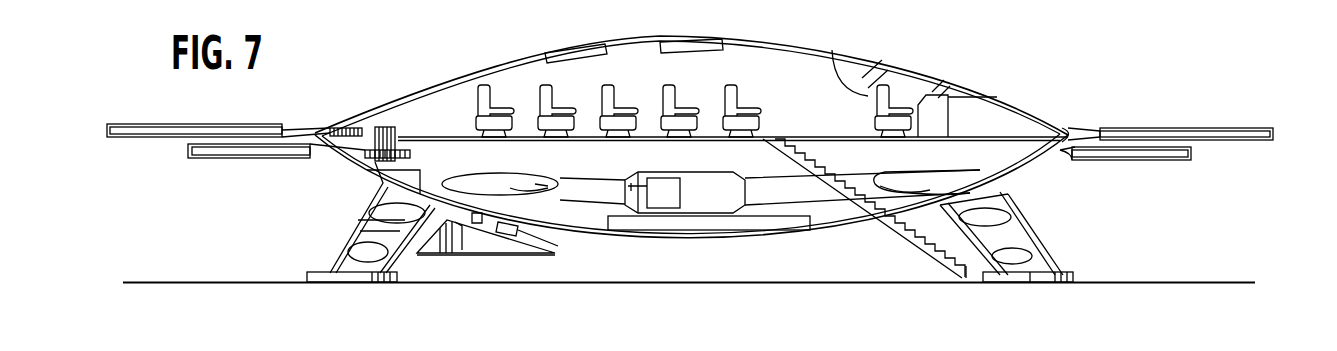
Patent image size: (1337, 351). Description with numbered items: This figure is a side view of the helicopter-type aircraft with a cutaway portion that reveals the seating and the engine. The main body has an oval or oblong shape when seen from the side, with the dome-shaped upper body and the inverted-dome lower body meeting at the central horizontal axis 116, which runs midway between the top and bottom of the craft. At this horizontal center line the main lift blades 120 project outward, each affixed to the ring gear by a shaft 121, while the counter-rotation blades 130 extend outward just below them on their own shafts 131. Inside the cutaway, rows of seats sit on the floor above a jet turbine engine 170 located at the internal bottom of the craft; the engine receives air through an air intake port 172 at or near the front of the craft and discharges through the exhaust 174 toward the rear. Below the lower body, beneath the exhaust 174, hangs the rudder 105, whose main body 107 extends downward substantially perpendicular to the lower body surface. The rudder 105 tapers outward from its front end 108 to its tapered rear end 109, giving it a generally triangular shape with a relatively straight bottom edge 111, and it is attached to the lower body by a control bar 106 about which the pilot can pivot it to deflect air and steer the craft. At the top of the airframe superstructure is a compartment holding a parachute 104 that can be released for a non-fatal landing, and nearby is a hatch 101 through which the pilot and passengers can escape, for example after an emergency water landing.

The hatch 101 is at (588, 45).
The parachute 104 is at (706, 42).
The rudder 105 is at (492, 245).
The control bar 106 is at (530, 234).
The main body of rudder 107 is at (474, 214).
The front end of rudder 108 is at (545, 254).
The rear end of rudder 109 is at (418, 258).
The bottom edge of rudder 111 is at (458, 233).
The central horizontal axis 116 is at (1072, 130).
The lift blade 120 is at (1240, 127).
The shaft 121 is at (1092, 130).
The counter-rotation blade 130 is at (1145, 161).
The shaft 131 is at (1071, 160).
The jet turbine engine 170 is at (654, 172).
The air intake port 172 is at (963, 163).
The exhaust 174 is at (517, 178).